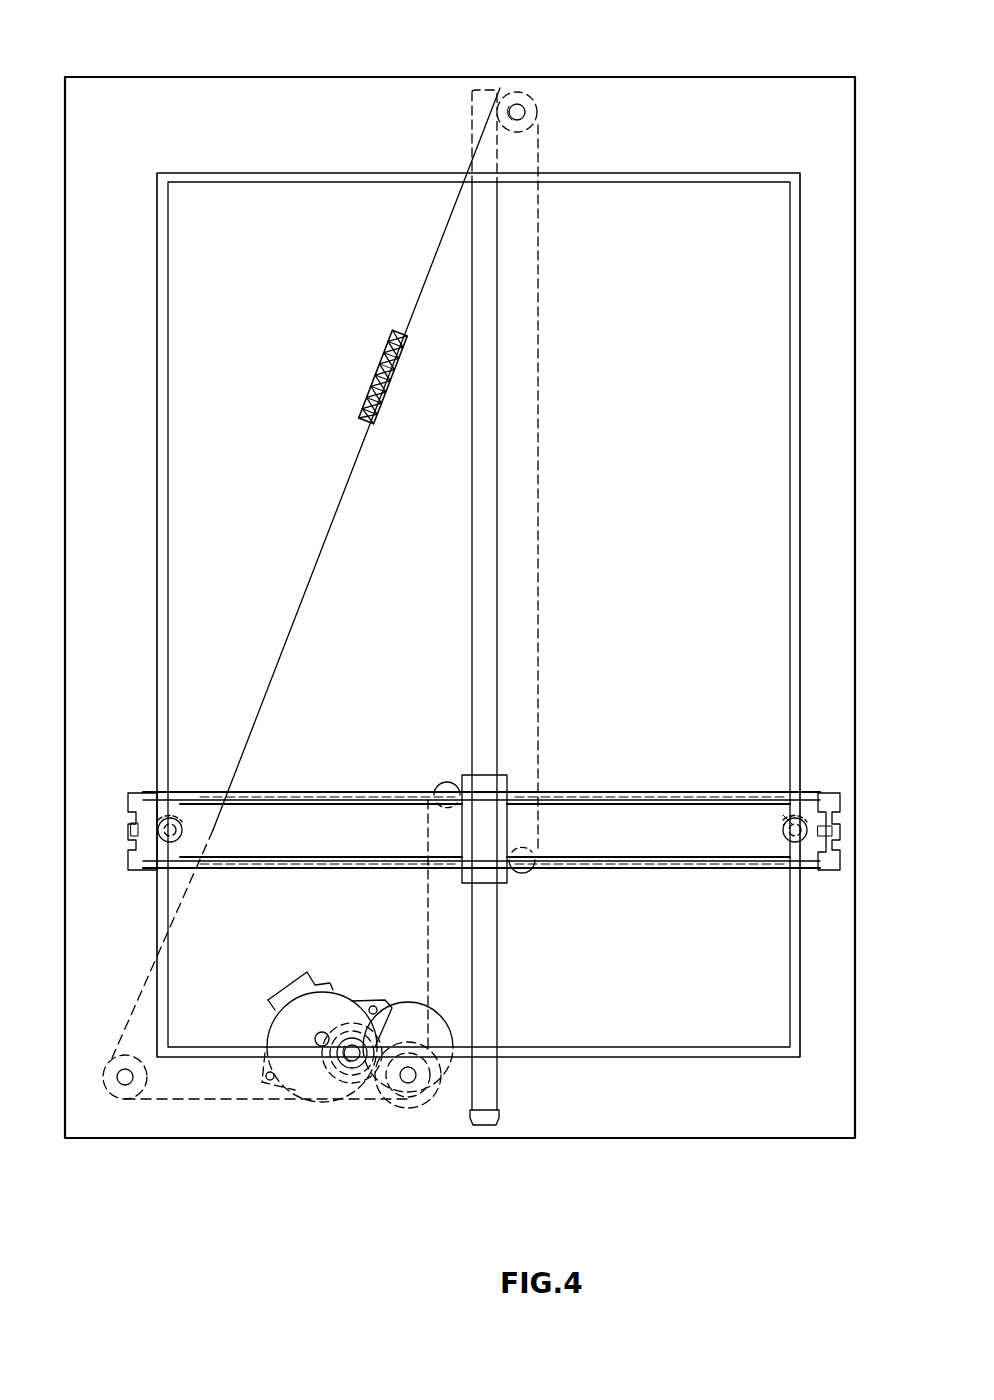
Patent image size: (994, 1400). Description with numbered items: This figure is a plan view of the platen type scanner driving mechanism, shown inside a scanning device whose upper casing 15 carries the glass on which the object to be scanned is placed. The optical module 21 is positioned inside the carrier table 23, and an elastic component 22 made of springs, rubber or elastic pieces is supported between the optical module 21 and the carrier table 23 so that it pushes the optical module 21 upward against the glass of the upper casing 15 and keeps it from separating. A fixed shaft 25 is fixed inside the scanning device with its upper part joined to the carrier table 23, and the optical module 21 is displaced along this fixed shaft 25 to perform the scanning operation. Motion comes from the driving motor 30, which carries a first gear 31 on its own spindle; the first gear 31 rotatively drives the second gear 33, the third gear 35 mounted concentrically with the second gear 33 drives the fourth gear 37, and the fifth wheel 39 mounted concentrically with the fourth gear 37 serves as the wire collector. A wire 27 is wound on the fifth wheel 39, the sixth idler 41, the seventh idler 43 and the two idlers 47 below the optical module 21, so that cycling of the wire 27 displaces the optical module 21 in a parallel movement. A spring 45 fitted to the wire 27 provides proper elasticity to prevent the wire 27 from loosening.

The upper casing 15 is at (670, 85).
The optical module 21 is at (830, 793).
The elastic component 22 is at (770, 808).
The carrier table 23 is at (600, 790).
The fixed shaft 25 is at (497, 930).
The wire 27 is at (538, 505).
The driving motor 30 is at (302, 1005).
The first gear 31 is at (315, 1040).
The second gear 33 is at (340, 1100).
The third gear 35 is at (352, 1050).
The fourth gear 37 is at (407, 1120).
The fifth wheel 39 is at (425, 1105).
The sixth idler 41 is at (125, 1100).
The seventh idler 43 is at (528, 95).
The spring 45 is at (372, 371).
The idlers 47 is at (447, 782).